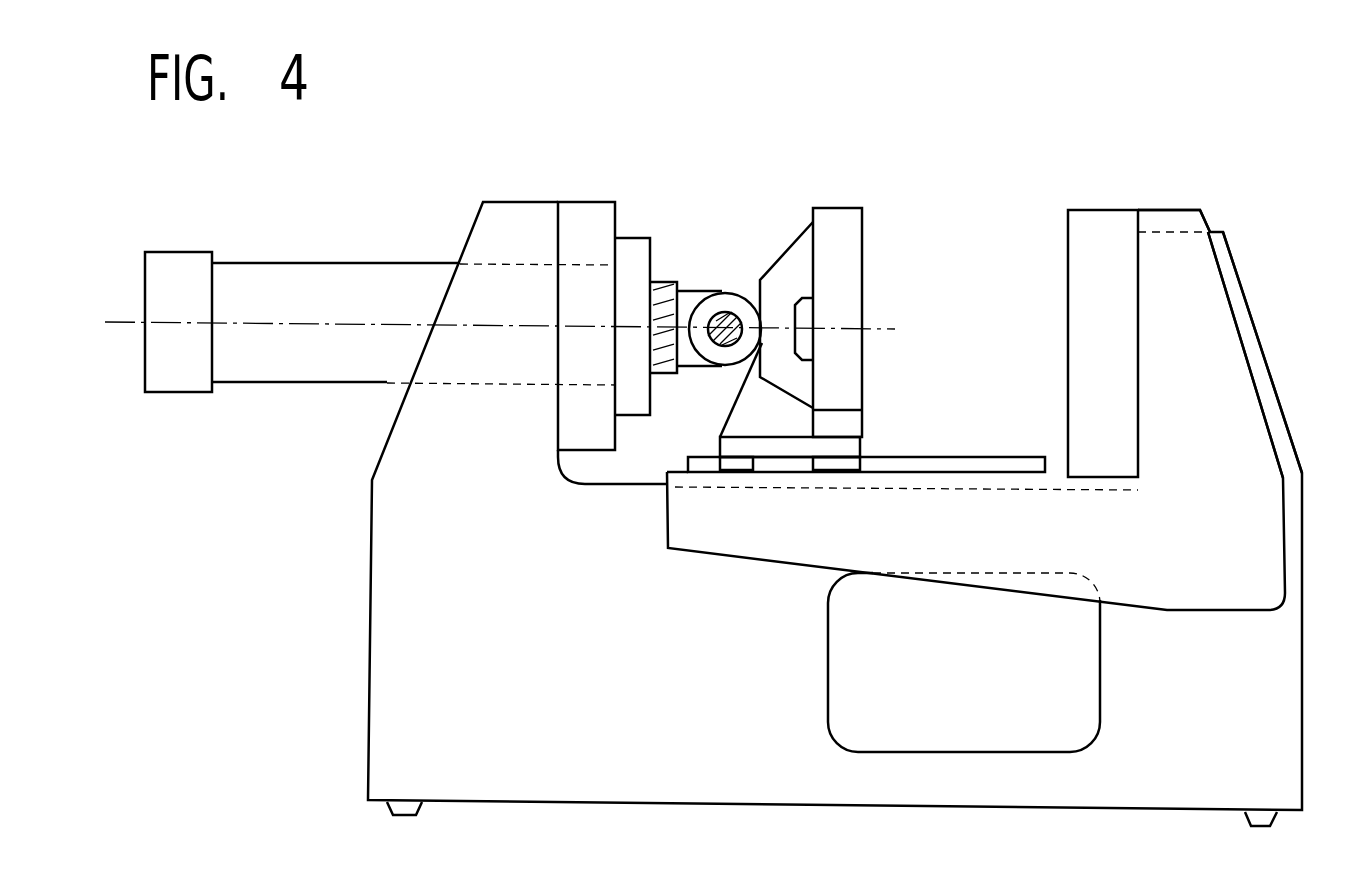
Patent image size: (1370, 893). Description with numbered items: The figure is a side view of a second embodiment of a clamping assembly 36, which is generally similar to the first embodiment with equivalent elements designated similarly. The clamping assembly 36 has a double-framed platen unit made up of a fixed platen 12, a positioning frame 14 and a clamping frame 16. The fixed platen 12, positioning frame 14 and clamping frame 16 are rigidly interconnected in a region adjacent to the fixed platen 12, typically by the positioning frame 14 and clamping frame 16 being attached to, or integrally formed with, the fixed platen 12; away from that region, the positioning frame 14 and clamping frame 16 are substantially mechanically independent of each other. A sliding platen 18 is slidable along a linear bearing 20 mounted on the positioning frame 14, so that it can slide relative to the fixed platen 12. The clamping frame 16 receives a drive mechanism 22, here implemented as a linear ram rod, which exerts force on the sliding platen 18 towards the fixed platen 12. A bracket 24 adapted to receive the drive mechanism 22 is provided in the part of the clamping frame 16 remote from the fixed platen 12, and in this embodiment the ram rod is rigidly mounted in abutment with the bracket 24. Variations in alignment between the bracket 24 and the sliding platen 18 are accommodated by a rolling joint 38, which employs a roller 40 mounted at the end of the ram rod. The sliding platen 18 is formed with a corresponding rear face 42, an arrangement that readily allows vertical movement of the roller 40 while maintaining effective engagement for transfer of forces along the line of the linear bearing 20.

The fixed platen 12 is at (1088, 260).
The positioning frame 14 is at (1195, 285).
The clamping frame 16 is at (1263, 378).
The sliding platen 18 is at (848, 250).
The linear bearing 20 is at (963, 470).
The drive mechanism 22 is at (300, 360).
The bracket 24 is at (592, 223).
The clamping assembly 36 is at (1288, 197).
The rolling joint 38 is at (748, 262).
The roller 40 is at (723, 292).
The rear face 42 is at (775, 290).